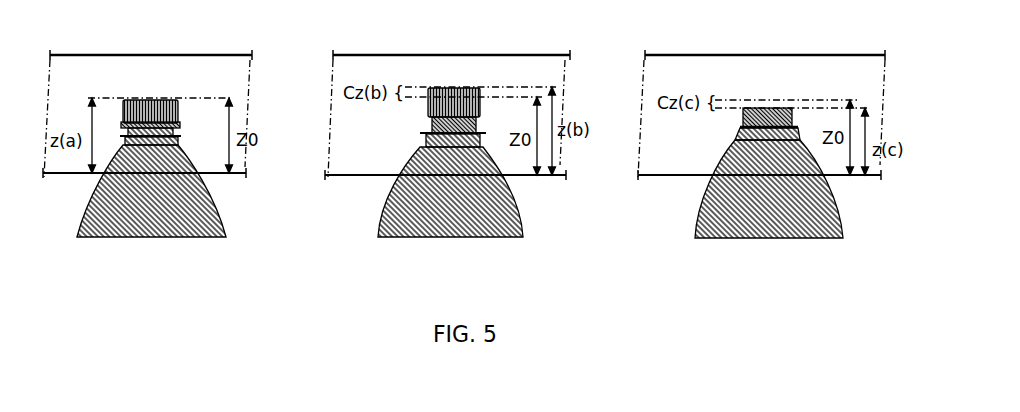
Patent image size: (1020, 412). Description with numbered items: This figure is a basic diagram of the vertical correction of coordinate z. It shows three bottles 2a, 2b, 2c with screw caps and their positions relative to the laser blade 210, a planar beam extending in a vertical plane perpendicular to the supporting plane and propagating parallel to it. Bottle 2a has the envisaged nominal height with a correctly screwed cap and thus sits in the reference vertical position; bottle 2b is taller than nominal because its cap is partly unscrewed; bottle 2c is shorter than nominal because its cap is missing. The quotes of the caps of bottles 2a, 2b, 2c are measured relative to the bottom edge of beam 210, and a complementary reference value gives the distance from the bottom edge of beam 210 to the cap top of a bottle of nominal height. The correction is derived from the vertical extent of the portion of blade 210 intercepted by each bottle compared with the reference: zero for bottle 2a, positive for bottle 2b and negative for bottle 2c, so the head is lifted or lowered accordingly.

The bottle 2a is at (133, 215).
The bottle 2b is at (447, 213).
The bottle 2c is at (766, 213).
The planar beam 210 is at (218, 165).